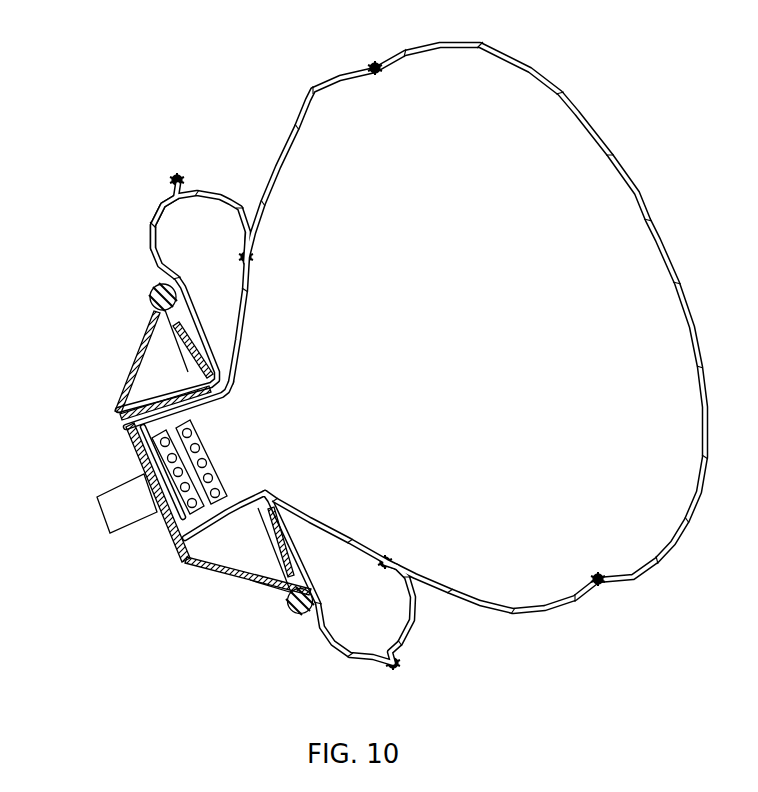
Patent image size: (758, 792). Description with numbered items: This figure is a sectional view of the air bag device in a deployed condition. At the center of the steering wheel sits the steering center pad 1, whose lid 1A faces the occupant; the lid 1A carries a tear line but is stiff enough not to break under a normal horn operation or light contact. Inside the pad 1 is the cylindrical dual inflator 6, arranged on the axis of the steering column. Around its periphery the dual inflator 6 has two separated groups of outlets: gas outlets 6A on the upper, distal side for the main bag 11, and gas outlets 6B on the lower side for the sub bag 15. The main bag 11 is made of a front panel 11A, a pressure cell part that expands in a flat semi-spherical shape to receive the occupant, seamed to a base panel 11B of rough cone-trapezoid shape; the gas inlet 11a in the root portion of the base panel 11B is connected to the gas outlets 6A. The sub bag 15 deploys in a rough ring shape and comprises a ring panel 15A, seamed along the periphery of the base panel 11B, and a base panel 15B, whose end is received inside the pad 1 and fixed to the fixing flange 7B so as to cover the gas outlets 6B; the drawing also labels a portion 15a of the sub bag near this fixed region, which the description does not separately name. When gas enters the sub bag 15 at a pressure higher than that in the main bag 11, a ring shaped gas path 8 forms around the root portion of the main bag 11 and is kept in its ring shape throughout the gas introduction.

The steering center pad 1 is at (235, 588).
The lid 1A is at (190, 348).
The dual inflator 6 is at (225, 462).
The gas outlets for the main bag 6A is at (213, 577).
The gas outlets for the sub bag 6B is at (170, 548).
The fixing flange 7B is at (143, 447).
The ring shaped gas path 8 is at (119, 418).
The main bag 11 is at (415, 355).
The front panel 11A is at (531, 71).
The base panel 11B is at (362, 357).
The gas inlet 11a is at (225, 399).
The sub bag 15 is at (249, 416).
The ring panel 15A is at (209, 190).
The base panel 15B is at (151, 217).
The strap clamped portion 15a is at (136, 432).